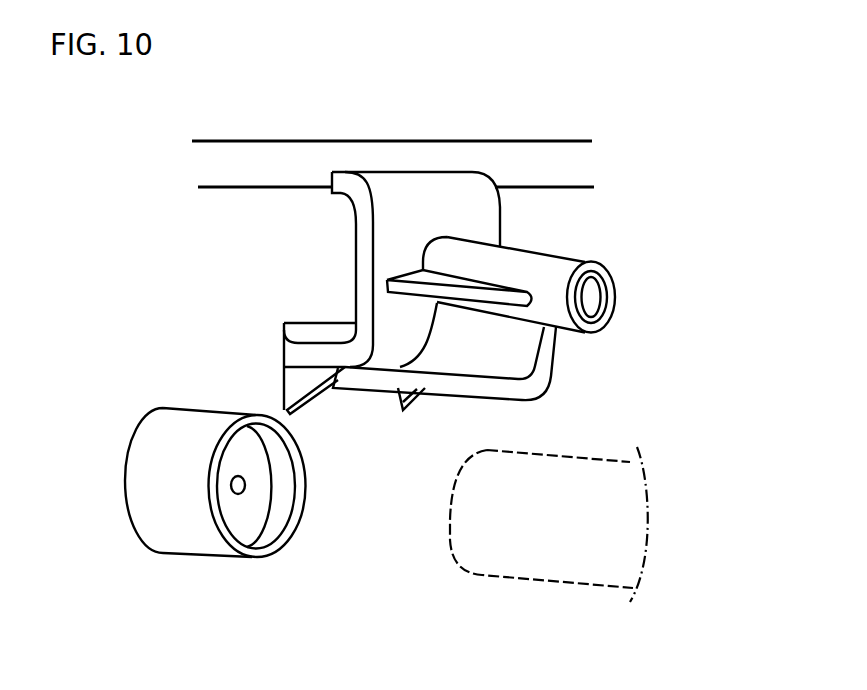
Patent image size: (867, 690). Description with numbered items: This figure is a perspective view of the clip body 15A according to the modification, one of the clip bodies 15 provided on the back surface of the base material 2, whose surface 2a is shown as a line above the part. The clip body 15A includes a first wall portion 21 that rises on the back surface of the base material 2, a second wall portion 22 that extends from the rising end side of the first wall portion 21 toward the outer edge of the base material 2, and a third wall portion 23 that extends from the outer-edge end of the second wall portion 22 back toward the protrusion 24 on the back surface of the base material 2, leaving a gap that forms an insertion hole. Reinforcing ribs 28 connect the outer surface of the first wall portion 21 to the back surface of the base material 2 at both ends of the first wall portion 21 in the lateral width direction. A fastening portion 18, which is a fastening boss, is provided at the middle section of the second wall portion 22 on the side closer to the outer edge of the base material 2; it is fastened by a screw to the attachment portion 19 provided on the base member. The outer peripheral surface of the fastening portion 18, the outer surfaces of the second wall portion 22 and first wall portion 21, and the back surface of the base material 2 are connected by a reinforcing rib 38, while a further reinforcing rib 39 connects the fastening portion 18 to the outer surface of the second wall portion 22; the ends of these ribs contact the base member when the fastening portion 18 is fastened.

The base material 2 is at (220, 262).
The panel surface 2a is at (313, 141).
The protrusion 24 is at (515, 154).
The third wall portion 23 is at (336, 195).
The second wall portion 22 is at (366, 248).
The first wall portion 21 is at (320, 353).
The reinforcing rib 28 is at (297, 380).
The clip body 15A is at (533, 228).
The clip body 15 is at (497, 286).
The fastening portion 18 is at (581, 263).
The reinforcing rib 38 is at (531, 390).
The reinforcing rib 39 is at (462, 302).
The attachment portion 19 is at (450, 528).